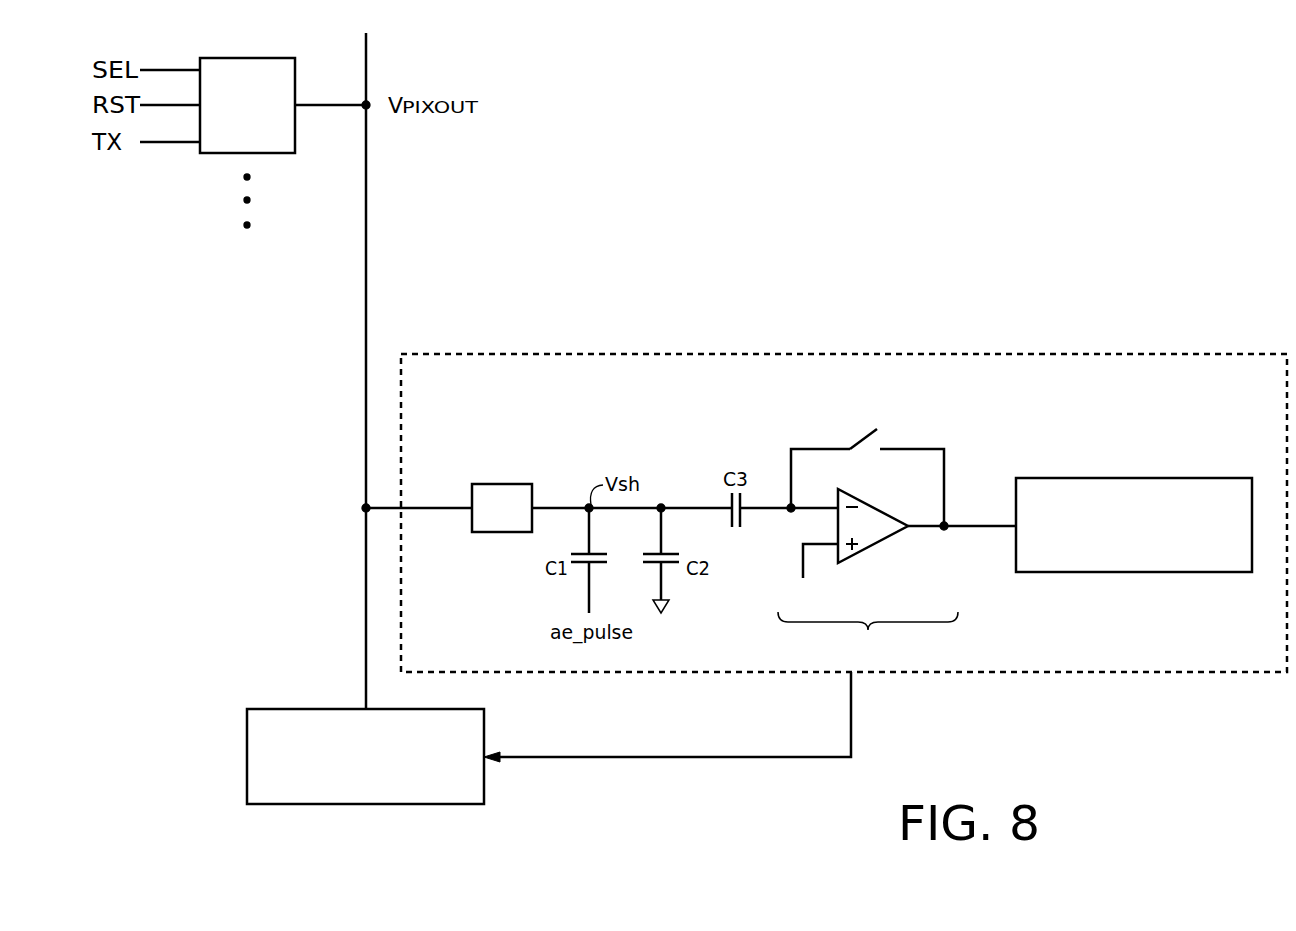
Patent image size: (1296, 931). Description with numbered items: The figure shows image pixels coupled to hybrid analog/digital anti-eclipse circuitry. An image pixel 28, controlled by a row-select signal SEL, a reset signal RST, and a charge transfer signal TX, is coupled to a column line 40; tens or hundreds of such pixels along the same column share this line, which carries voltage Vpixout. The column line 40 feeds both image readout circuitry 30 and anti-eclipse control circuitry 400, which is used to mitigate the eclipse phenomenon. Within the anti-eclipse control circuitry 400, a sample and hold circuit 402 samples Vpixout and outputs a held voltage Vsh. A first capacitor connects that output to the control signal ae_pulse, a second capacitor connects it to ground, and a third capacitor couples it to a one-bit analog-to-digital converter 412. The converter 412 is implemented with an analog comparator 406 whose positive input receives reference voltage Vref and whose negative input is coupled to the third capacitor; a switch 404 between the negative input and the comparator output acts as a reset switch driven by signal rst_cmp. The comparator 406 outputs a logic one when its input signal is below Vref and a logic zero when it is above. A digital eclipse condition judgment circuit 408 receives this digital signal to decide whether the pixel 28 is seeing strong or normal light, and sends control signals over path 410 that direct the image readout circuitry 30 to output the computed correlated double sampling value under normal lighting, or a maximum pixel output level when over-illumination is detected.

The image pixel 28 is at (262, 119).
The column line 40 is at (367, 234).
The image readout circuitry 30 is at (283, 714).
The anti-eclipse control circuitry 400 is at (557, 354).
The sample and hold circuit 402 is at (502, 486).
The switch 404 is at (868, 451).
The analog comparator 406 is at (875, 541).
The digital eclipse condition judgment circuit 408 is at (1168, 481).
The path 410 is at (719, 758).
The one-bit analog-to-digital converter 412 is at (868, 636).